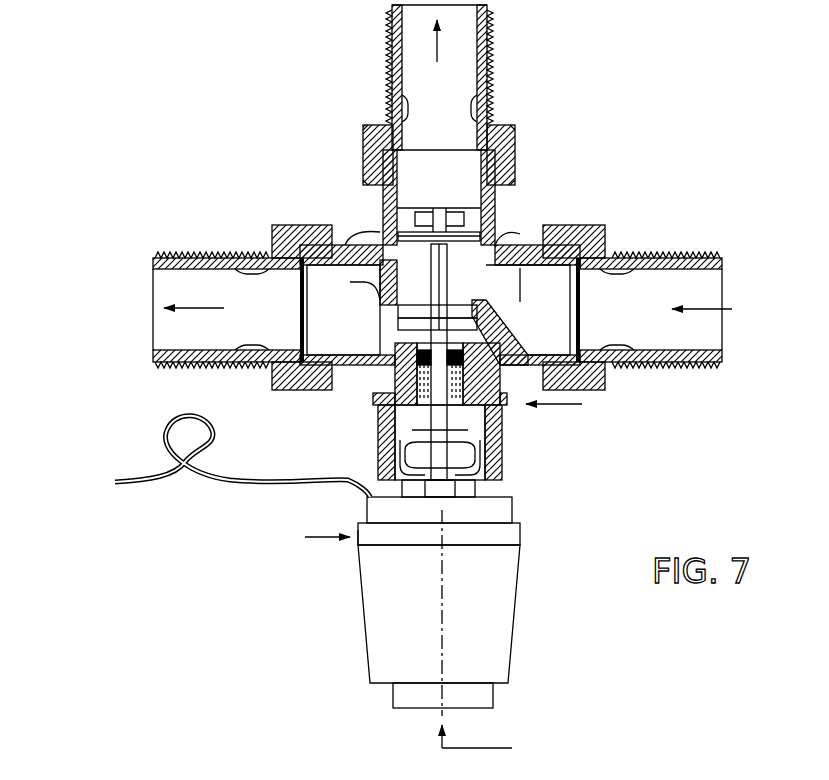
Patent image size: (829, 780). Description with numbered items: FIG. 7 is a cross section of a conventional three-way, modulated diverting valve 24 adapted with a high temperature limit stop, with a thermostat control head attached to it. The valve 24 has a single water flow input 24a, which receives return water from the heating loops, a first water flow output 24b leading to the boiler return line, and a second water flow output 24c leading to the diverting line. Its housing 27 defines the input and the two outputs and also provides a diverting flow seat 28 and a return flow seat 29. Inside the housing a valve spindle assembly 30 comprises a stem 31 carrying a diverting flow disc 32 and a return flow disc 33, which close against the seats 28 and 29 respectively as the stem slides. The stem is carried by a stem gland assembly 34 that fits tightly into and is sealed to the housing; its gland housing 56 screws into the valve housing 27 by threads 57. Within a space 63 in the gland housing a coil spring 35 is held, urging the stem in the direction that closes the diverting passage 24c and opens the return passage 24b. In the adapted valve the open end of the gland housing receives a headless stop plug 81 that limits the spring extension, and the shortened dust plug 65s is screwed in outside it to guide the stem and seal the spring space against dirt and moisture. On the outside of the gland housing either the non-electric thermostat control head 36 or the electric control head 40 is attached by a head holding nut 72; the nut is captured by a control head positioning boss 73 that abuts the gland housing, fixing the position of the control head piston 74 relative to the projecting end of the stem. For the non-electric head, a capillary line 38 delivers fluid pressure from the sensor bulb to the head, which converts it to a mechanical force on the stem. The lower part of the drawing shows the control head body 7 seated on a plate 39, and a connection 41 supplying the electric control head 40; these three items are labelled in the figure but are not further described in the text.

The three-way modulated diverting valve 24 is at (582, 182).
The water flow input 24a is at (548, 228).
The first water flow output 24b is at (345, 243).
The second water flow output 24c is at (378, 192).
The housing 27 is at (508, 244).
The diverting flow seat 28 is at (396, 220).
The return flow seat 29 is at (366, 315).
The valve spindle assembly 30 is at (474, 295).
The stem 31 is at (449, 287).
The diverting flow disc 32 is at (470, 232).
The return flow disc 33 is at (413, 308).
The stem gland assembly 34 is at (574, 406).
The coil spring 35 is at (395, 396).
The non-electric thermostat control head 36 is at (312, 546).
The capillary line 38 is at (138, 478).
The mounting plate 39 is at (520, 531).
The electric control head 40 is at (315, 560).
The control line 41 is at (559, 742).
The gland housing 56 is at (398, 347).
The threads 57 is at (393, 382).
The space 63 is at (378, 437).
The shortened dust plug 65s is at (498, 461).
The head holding nut 72 is at (498, 477).
The control head positioning boss 73 is at (378, 461).
The control head piston 74 is at (442, 490).
The headless stop plug 81 is at (500, 434).
The actuator body 7 is at (517, 583).